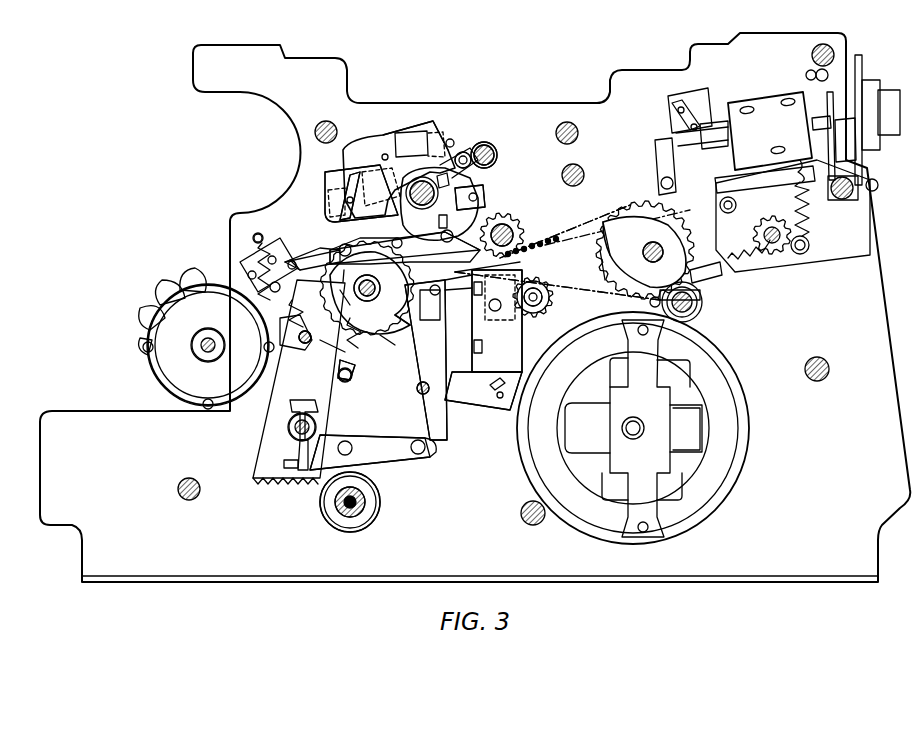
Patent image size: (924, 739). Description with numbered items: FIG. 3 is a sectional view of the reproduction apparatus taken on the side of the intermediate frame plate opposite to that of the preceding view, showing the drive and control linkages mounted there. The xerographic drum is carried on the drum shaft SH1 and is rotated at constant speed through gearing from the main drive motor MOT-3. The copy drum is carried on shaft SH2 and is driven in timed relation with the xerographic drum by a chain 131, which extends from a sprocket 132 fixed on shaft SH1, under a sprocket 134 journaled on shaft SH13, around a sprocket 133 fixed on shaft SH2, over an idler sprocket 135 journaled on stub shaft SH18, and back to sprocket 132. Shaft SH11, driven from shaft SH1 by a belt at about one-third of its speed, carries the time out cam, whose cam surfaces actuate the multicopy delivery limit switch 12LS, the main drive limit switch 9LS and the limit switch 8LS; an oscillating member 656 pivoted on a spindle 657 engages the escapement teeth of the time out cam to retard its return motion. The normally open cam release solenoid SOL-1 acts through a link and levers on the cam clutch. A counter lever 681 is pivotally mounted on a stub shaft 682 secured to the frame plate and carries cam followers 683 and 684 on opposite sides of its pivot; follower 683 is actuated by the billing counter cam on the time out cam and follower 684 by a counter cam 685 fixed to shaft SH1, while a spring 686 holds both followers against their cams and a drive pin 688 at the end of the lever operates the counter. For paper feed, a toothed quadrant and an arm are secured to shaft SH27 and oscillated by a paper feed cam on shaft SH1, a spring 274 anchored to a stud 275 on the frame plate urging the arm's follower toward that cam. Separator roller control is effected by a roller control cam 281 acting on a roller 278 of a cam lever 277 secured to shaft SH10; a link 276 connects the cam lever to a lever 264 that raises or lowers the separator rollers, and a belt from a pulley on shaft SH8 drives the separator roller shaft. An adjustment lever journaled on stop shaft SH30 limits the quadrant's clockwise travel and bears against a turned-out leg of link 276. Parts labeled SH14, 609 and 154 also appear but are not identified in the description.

The main drive motor MOT-3 is at (205, 290).
The stud 275 is at (250, 300).
The stop shaft SH30 is at (290, 428).
The drive pin 688 is at (272, 235).
The cam follower 684 is at (335, 245).
The sprocket 132 is at (300, 250).
The limit switch 8LS is at (333, 203).
The multicopy delivery limit switch 12LS is at (366, 196).
The main drive limit switch 9LS is at (425, 120).
The oscillating member 656 is at (466, 152).
The spindle 657 is at (496, 155).
The shaft SH14 is at (498, 160).
The shaft SH11 is at (470, 190).
The cam follower 683 is at (492, 210).
The sprocket 134 is at (522, 228).
The shaft SH13 is at (520, 238).
The chain 131 is at (520, 258).
The cam 609 is at (603, 240).
The sprocket 133 is at (591, 265).
The shaft SH2 is at (652, 248).
The stub shaft 682 is at (400, 243).
The drum shaft SH1 is at (367, 284).
The counter lever 681 is at (374, 286).
The roller 278 is at (438, 288).
The counter cam 685 is at (372, 318).
The roller control cam 281 is at (427, 360).
The spring 686 is at (304, 329).
The shaft SH27 is at (306, 343).
The spring 274 is at (358, 368).
The shaft SH10 is at (418, 392).
The cam lever 277 is at (440, 403).
The idler sprocket 135 is at (552, 298).
The belt 154 is at (648, 305).
The stub shaft SH18 is at (538, 312).
The cam release solenoid SOL-1 is at (518, 325).
The link 276 is at (400, 458).
The lever 264 is at (370, 485).
The shaft SH8 is at (366, 505).